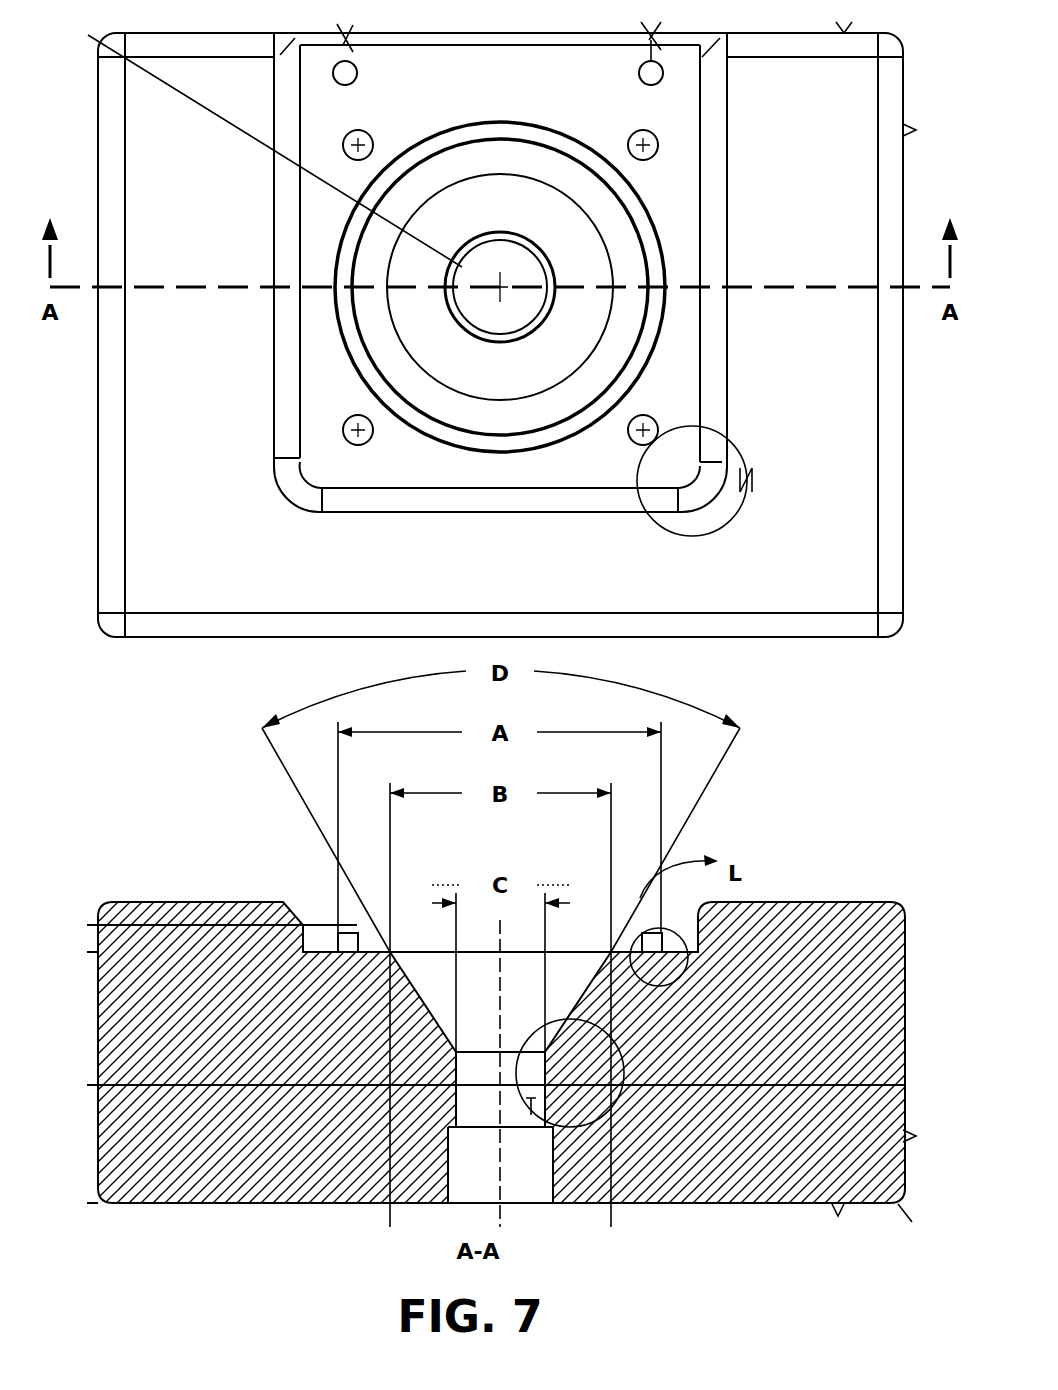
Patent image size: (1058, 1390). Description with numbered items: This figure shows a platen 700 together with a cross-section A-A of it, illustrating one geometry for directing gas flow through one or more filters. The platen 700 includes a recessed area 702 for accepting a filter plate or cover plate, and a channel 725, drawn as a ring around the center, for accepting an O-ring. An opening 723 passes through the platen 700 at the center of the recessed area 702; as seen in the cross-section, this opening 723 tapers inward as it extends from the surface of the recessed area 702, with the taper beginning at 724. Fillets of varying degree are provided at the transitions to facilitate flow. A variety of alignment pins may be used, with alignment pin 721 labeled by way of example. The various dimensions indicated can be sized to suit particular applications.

The platen 700 is at (848, 42).
The recessed area 702 is at (472, 58).
The alignment pin 721 is at (358, 432).
The opening 723 is at (528, 262).
The taper 724 is at (392, 952).
The channel 725 is at (518, 135).